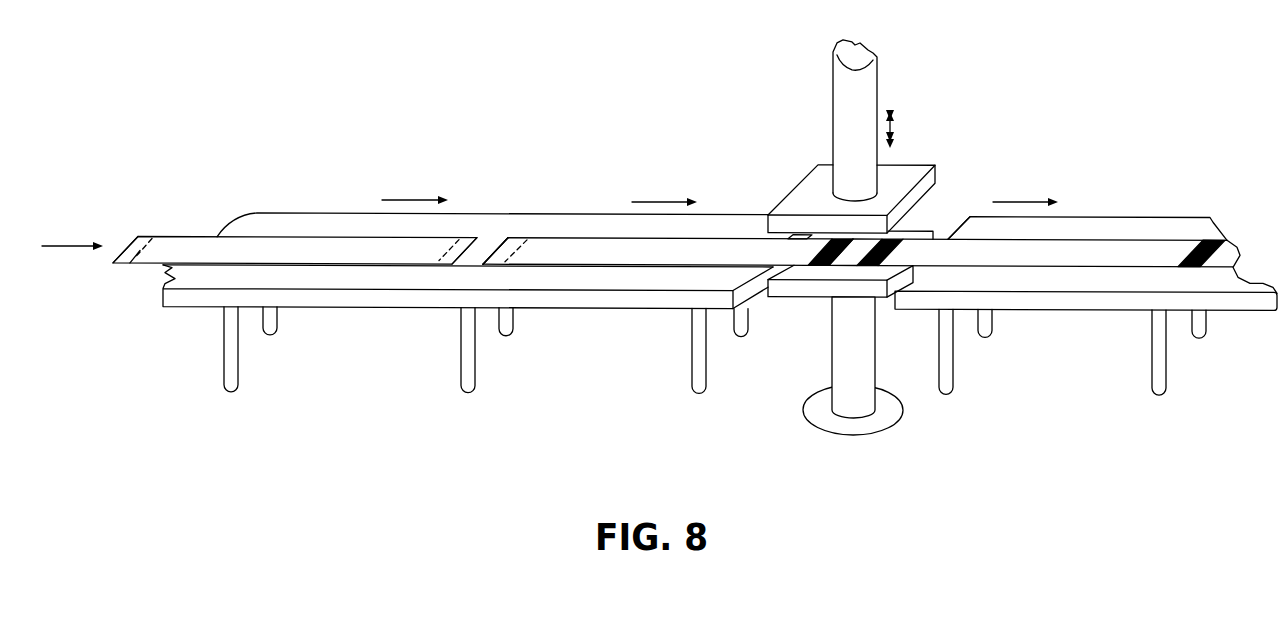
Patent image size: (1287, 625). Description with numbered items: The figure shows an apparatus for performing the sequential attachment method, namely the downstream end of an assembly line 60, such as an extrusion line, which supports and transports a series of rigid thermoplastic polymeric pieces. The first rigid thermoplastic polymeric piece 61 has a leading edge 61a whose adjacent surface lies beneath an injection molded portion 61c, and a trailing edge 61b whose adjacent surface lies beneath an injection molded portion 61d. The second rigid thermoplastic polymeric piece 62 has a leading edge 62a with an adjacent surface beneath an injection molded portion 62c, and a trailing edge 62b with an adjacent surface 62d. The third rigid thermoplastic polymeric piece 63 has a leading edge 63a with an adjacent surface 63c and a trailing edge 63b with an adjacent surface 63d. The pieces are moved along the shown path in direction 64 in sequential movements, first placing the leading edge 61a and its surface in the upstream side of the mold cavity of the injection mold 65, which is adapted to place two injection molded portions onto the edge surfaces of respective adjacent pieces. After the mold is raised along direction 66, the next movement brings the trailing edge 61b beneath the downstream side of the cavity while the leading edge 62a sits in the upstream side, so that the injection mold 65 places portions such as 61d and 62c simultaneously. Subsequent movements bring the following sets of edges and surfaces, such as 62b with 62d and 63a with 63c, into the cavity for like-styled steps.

The assembly line 60 is at (362, 339).
The first rigid thermoplastic polymeric piece 61 is at (955, 253).
The leading edge of first polymeric piece 61a is at (1228, 242).
The trailing edge of first polymeric piece 61b is at (860, 247).
The injection molded portion 61c is at (1213, 222).
The injection molded portion 61d is at (900, 250).
The second rigid thermoplastic polymeric piece 62 is at (593, 250).
The leading edge of second polymeric piece 62a is at (842, 240).
The trailing edge of second polymeric piece 62b is at (505, 242).
The injection molded portion 62c is at (822, 256).
The adjacent surface of trailing edge of second polymeric piece 62d is at (520, 250).
The third rigid thermoplastic polymeric piece 63 is at (272, 250).
The leading edge of third polymeric piece 63a is at (473, 247).
The trailing edge of third polymeric piece 63b is at (133, 248).
The adjacent surface of leading edge of third polymeric piece 63c is at (452, 253).
The adjacent surface of trailing edge of third polymeric piece 63d is at (135, 253).
The direction of movement 64 is at (667, 200).
The injection mold 65 is at (870, 97).
The direction of mold raising 66 is at (892, 133).